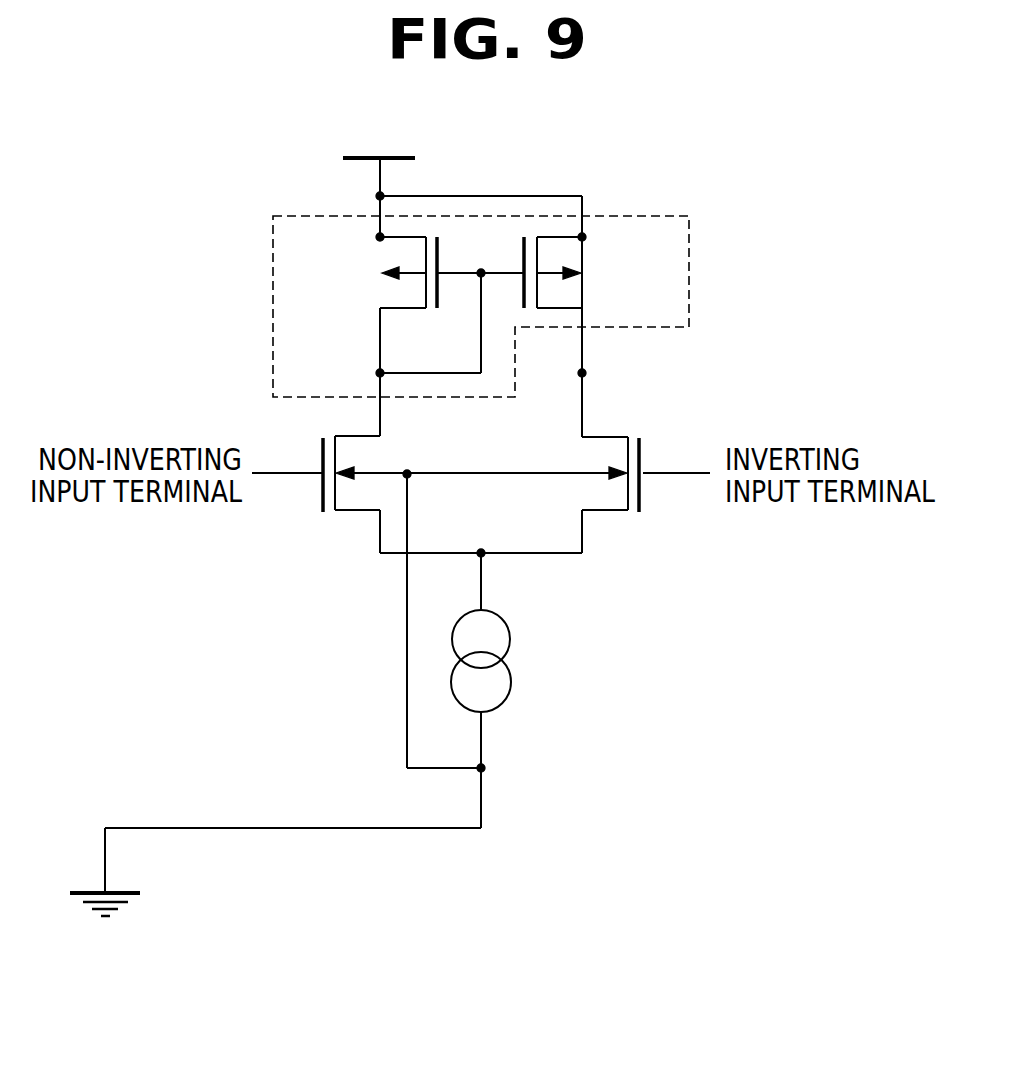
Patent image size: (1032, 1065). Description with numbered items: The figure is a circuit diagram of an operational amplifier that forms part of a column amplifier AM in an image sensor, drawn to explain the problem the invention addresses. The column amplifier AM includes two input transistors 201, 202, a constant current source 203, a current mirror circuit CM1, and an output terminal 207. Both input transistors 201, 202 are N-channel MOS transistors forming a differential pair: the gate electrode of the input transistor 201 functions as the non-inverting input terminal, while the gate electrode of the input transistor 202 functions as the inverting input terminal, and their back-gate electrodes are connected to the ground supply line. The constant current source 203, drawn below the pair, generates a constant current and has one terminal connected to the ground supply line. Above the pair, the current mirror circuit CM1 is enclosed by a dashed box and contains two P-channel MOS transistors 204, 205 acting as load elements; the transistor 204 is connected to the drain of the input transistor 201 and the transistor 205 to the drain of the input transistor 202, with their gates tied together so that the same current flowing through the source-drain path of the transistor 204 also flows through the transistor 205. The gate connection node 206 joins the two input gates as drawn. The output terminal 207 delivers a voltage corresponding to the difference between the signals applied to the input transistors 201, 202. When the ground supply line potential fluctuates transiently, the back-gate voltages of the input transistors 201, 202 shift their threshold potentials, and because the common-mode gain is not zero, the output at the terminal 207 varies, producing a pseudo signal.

The input transistor 201 is at (330, 518).
The input transistor 202 is at (632, 517).
The constant current source 203 is at (513, 662).
The transistor (load element) 204 is at (369, 275).
The transistor (load element) 205 is at (590, 275).
The gate connection node 206 is at (435, 457).
The output terminal 207 is at (582, 373).
The current mirror circuit CM1 is at (689, 243).
The column amplifier (operational amplifier) AM is at (672, 851).